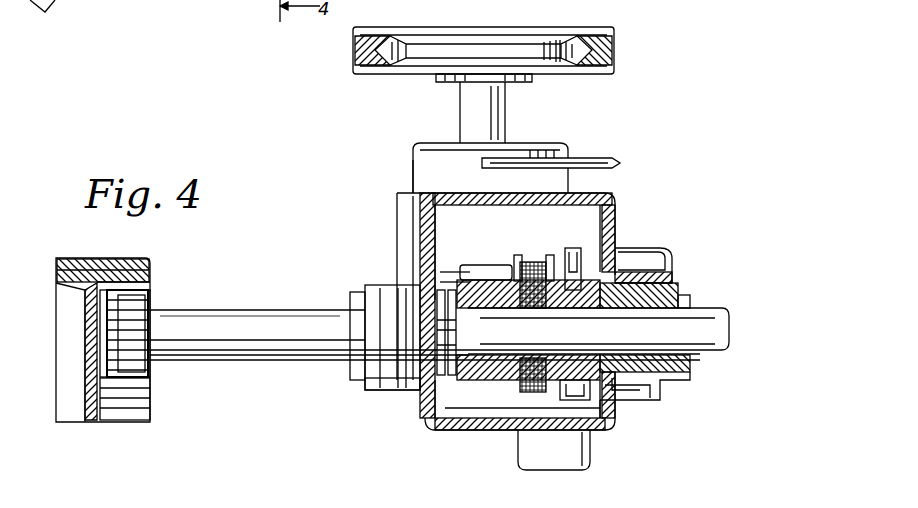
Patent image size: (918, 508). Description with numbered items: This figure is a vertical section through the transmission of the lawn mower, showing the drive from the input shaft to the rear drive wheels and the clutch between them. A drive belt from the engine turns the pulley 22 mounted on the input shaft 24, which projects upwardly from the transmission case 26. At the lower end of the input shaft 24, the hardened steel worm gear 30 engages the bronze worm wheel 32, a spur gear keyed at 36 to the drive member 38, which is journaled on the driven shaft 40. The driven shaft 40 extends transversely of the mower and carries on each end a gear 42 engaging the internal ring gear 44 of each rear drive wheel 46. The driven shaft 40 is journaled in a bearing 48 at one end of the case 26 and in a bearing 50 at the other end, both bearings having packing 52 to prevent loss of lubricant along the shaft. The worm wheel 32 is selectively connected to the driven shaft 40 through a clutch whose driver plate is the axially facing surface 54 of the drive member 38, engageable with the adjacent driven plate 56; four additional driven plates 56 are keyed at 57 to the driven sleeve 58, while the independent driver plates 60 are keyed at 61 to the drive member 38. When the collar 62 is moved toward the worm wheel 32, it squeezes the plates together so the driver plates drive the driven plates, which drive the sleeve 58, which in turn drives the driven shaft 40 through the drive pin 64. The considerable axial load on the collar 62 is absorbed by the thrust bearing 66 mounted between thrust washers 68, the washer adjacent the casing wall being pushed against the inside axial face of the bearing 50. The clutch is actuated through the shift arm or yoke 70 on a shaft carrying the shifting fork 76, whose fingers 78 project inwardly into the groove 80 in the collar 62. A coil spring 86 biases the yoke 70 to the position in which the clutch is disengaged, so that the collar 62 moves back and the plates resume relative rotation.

The pulley 22 is at (562, 20).
The input shaft 24 is at (460, 100).
The transmission case 26 is at (410, 194).
The worm gear 30 is at (455, 268).
The worm wheel 32 is at (470, 268).
The key 36 is at (528, 330).
The drive member 38 is at (490, 418).
The driven shaft 40 is at (238, 318).
The gear 42 is at (148, 370).
The internal ring gear 44 is at (120, 410).
The rear drive wheel 46 is at (60, 270).
The bearing 48 is at (680, 290).
The bearing 50 is at (362, 292).
The packing 52 is at (678, 374).
The axially facing surface 54 is at (490, 265).
The driven plate 56 is at (536, 437).
The key 57 is at (565, 358).
The driven sleeve 58 is at (532, 285).
The driver plate 60 is at (550, 258).
The key 61 is at (518, 258).
The collar 62 is at (600, 420).
The drive pin 64 is at (598, 334).
The thrust bearing 66 is at (425, 388).
The thrust washer 68 is at (440, 352).
The shift arm or yoke 70 is at (592, 160).
The shifting fork 76 is at (612, 226).
The finger 78 is at (602, 394).
The groove 80 is at (615, 250).
The coil spring 86 is at (127, 9).